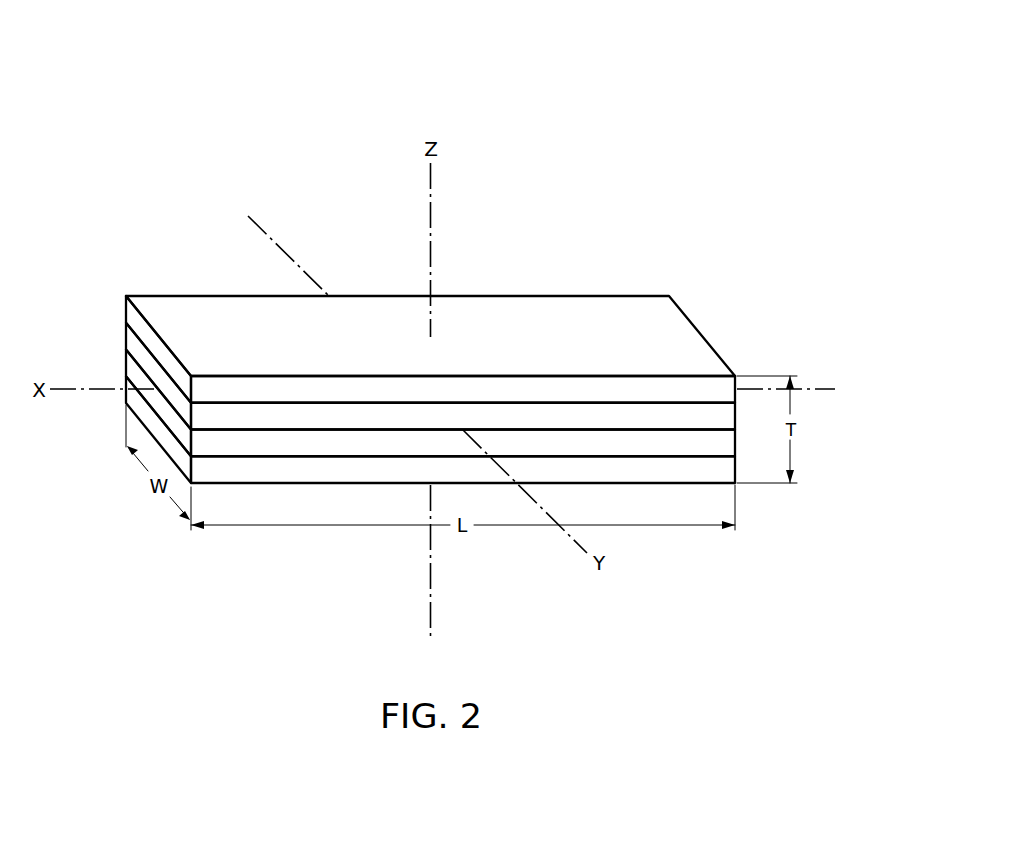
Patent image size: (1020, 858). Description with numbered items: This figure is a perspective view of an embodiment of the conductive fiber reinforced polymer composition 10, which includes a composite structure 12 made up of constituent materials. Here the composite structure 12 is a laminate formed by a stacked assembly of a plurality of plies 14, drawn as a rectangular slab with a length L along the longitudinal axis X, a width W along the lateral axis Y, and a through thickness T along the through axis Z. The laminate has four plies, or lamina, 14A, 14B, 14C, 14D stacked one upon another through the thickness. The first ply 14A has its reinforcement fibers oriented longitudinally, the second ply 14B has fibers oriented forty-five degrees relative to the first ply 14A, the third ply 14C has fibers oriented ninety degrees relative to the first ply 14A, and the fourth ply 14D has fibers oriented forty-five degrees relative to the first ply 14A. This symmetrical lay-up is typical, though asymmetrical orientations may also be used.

The conductive fiber reinforced polymer composition 10 is at (656, 104).
The composite structure 12 is at (642, 308).
The plies 14 is at (134, 313).
The first ply 14A is at (223, 388).
The second ply 14B is at (281, 413).
The third ply 14C is at (345, 442).
The fourth ply 14D is at (408, 468).